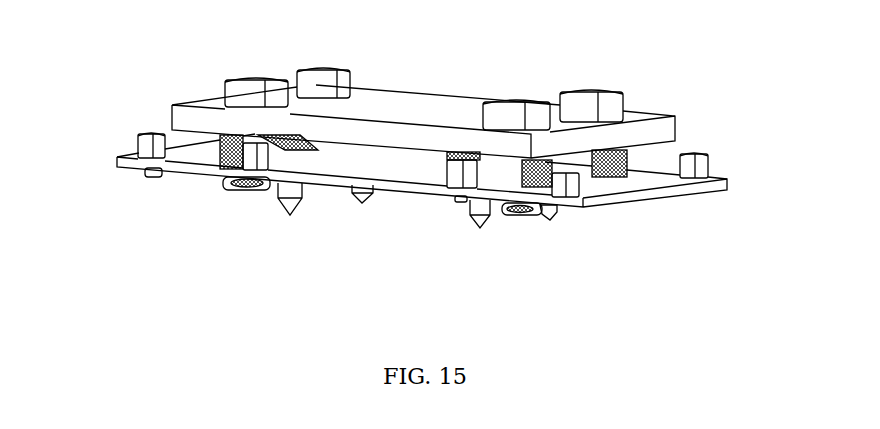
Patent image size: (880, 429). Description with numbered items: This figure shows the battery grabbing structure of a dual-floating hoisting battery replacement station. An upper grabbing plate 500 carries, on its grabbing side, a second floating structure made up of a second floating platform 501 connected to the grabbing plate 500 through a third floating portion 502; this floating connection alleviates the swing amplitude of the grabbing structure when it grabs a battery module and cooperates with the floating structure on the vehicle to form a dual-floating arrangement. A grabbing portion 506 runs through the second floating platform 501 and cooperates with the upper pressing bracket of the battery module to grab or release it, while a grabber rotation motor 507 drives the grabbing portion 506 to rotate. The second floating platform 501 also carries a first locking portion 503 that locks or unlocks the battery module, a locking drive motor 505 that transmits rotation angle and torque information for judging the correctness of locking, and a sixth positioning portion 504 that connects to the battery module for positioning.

The grabbing plate 500 is at (635, 133).
The second floating platform 501 is at (660, 170).
The third floating portion 502 is at (617, 178).
The first locking portion 503 is at (157, 168).
The sixth positioning portion 504 is at (290, 215).
The locking drive motor 505 is at (143, 137).
The grabbing portion 506 is at (530, 215).
The grabber rotation motor 507 is at (583, 103).